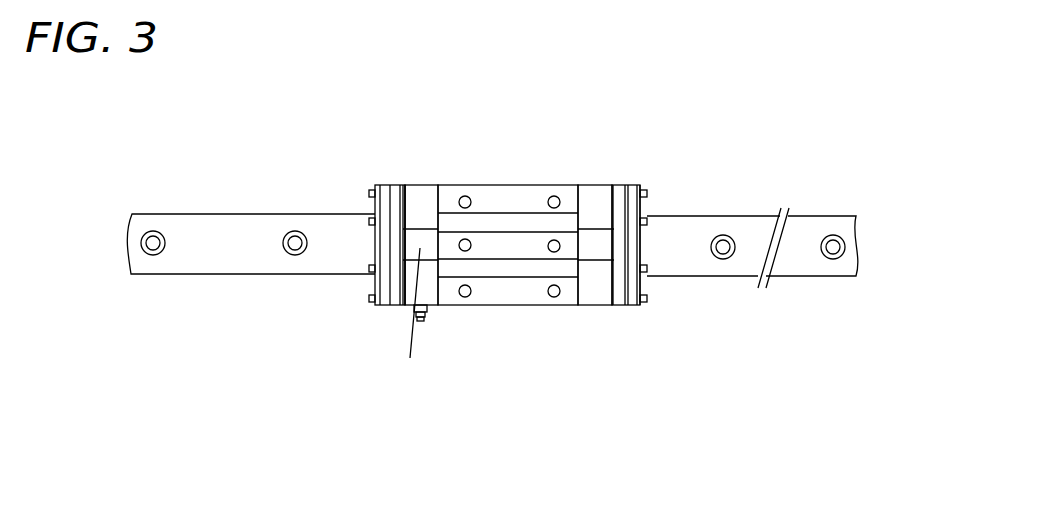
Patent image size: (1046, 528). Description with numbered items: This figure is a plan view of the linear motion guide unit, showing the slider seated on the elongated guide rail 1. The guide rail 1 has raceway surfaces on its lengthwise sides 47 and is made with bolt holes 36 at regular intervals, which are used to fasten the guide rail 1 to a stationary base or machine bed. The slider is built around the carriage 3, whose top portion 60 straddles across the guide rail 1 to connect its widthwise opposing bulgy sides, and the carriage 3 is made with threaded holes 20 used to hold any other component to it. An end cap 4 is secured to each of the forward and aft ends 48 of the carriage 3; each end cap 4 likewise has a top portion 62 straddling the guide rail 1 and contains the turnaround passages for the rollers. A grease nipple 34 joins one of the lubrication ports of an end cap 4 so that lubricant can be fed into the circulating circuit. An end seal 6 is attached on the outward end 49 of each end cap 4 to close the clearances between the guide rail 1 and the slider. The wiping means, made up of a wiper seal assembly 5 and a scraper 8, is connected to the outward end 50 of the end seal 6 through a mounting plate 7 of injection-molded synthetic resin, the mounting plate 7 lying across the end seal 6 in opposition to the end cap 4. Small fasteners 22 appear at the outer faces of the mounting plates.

The guide rail 1 is at (753, 233).
The carriage 3 is at (522, 192).
The end cap 4 is at (597, 200).
The wiper seal assembly 5 is at (383, 298).
The end seal 6 is at (408, 205).
The mounting plate 7 is at (398, 298).
The scraper 8 is at (375, 204).
The threaded hole 20 is at (472, 242).
The nut 22 is at (370, 270).
The grease nipple 34 is at (425, 323).
The bolt hole 36 is at (292, 240).
The lengthwise side 47 is at (492, 248).
The forward and aft end 48 is at (433, 187).
The outward end 49 is at (404, 205).
The outward end 50 is at (614, 262).
The top portion 60 is at (512, 252).
The top portion 62 is at (572, 163).